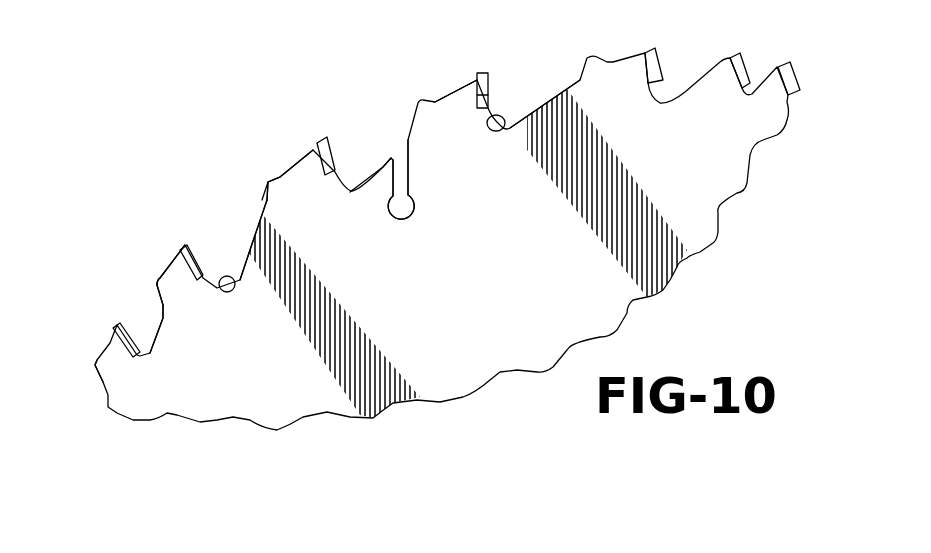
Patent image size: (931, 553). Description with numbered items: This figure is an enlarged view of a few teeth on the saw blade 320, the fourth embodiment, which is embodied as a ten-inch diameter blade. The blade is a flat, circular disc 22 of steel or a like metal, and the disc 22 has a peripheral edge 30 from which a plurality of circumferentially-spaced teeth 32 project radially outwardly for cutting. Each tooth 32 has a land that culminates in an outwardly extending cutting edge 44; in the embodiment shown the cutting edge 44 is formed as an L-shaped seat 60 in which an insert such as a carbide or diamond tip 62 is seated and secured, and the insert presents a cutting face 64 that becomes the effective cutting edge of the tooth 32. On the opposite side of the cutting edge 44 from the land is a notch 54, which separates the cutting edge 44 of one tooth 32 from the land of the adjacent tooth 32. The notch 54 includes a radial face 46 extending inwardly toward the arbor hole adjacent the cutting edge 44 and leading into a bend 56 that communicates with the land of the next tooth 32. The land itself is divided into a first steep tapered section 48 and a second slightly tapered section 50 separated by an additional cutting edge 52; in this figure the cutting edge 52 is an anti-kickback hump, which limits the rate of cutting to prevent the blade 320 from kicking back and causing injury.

The flat circular disc 22 is at (697, 172).
The saw blade 320 is at (250, 96).
The tooth 32 is at (410, 79).
The peripheral edge 30 is at (385, 117).
The notch 54 is at (381, 159).
The second slightly tapered section 50 is at (305, 152).
The additional cutting edge 52 is at (268, 182).
The first steep tapered section 48 is at (267, 197).
The bend 56 is at (223, 292).
The cutting edge 44 is at (478, 82).
The carbide or diamond tip 62 is at (480, 74).
The cutting face 64 is at (490, 80).
The radial face 46 is at (503, 132).
The L-shaped seat 60 is at (490, 98).